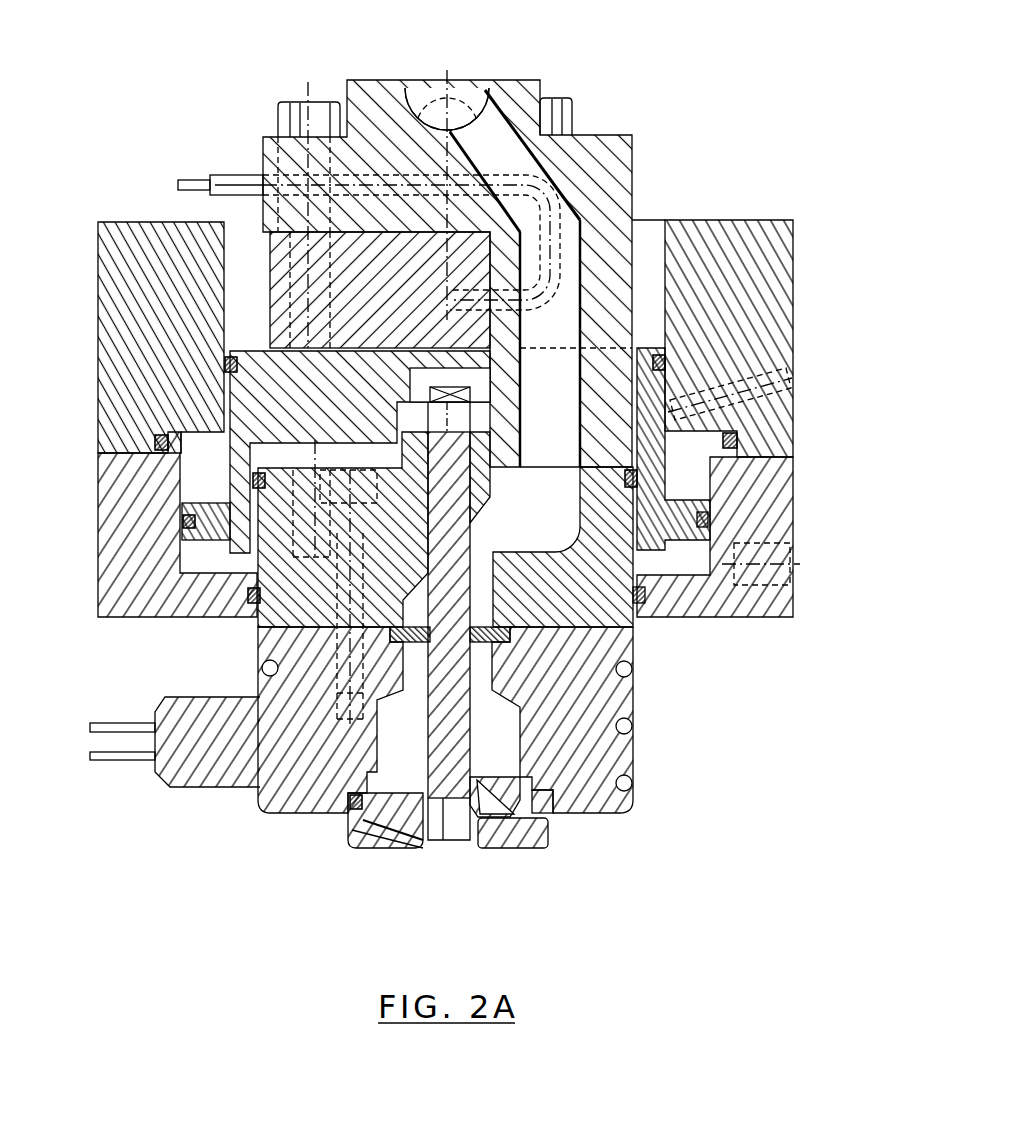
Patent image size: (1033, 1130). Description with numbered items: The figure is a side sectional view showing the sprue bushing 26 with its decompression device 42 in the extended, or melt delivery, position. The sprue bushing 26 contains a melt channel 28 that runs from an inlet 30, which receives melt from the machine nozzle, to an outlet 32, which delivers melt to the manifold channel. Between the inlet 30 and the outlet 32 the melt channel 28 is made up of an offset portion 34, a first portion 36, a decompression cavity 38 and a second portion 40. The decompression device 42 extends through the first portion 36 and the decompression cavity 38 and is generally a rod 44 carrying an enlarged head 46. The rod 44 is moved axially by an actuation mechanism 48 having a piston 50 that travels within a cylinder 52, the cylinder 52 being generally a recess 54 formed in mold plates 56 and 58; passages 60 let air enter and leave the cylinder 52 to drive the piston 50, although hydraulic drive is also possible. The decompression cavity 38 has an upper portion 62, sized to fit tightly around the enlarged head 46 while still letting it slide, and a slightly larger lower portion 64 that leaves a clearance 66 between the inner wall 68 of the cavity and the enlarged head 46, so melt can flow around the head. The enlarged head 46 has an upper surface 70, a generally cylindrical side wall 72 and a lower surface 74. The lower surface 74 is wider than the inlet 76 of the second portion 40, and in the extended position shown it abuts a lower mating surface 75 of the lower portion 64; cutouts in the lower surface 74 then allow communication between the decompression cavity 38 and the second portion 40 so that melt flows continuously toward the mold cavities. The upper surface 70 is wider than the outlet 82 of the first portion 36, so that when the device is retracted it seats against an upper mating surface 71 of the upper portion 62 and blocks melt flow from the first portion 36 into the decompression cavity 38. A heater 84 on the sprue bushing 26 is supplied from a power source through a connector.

The sprue bushing 26 is at (650, 130).
The melt channel 28 is at (565, 300).
The inlet 30 is at (470, 85).
The outlet 32 is at (457, 848).
The offset portion 34 is at (567, 215).
The first portion 36 is at (483, 597).
The decompression cavity 38 is at (497, 743).
The second portion 40 is at (427, 845).
The decompression device 42 is at (445, 578).
The rod 44 is at (440, 662).
The enlarged head 46 is at (550, 820).
The actuation mechanism 48 is at (715, 480).
The piston 50 is at (690, 515).
The cylinder 52 is at (700, 545).
The recess 54 is at (693, 572).
The mold plate 56 is at (736, 344).
The mold plate 58 is at (780, 475).
The passages 60 is at (793, 382).
The upper portion 62 is at (560, 683).
The lower portion 64 is at (590, 805).
The clearance 66 is at (382, 796).
The inner wall 68 is at (333, 800).
The upper surface 70 is at (545, 770).
The upper mating surface 71 is at (400, 690).
The generally cylindrical side wall 72 is at (360, 852).
The lower surface 74 is at (383, 852).
The lower mating surface 75 is at (507, 843).
The inlet 76 is at (445, 837).
The outlet 82 is at (483, 677).
The heater 84 is at (633, 669).